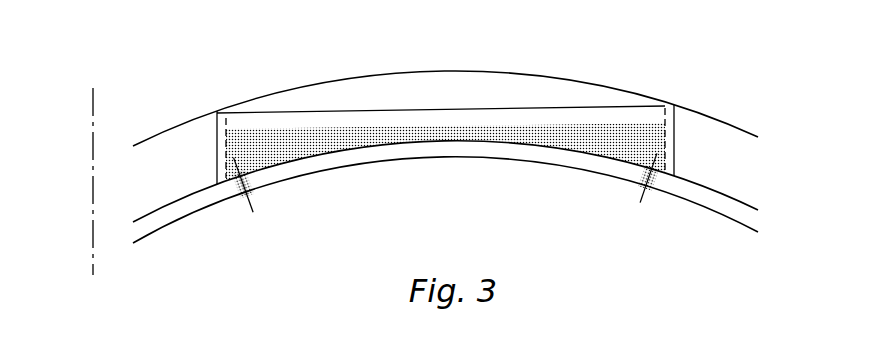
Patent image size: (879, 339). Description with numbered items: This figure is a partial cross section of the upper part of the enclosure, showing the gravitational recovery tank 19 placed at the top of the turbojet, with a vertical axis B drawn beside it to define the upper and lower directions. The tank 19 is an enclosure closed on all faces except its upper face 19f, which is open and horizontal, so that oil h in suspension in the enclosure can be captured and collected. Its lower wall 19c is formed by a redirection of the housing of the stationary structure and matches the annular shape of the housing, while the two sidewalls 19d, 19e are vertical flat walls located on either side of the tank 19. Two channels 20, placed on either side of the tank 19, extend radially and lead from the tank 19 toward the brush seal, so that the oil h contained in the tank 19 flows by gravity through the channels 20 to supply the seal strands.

The gravitational recovery tank 19 is at (540, 116).
The lower wall 19c is at (430, 150).
The sidewall 19d is at (220, 131).
The sidewall 19e is at (668, 125).
The upper face 19f is at (323, 110).
The channels 20 is at (232, 200).
The oil h is at (568, 138).
The vertical axis B is at (93, 217).